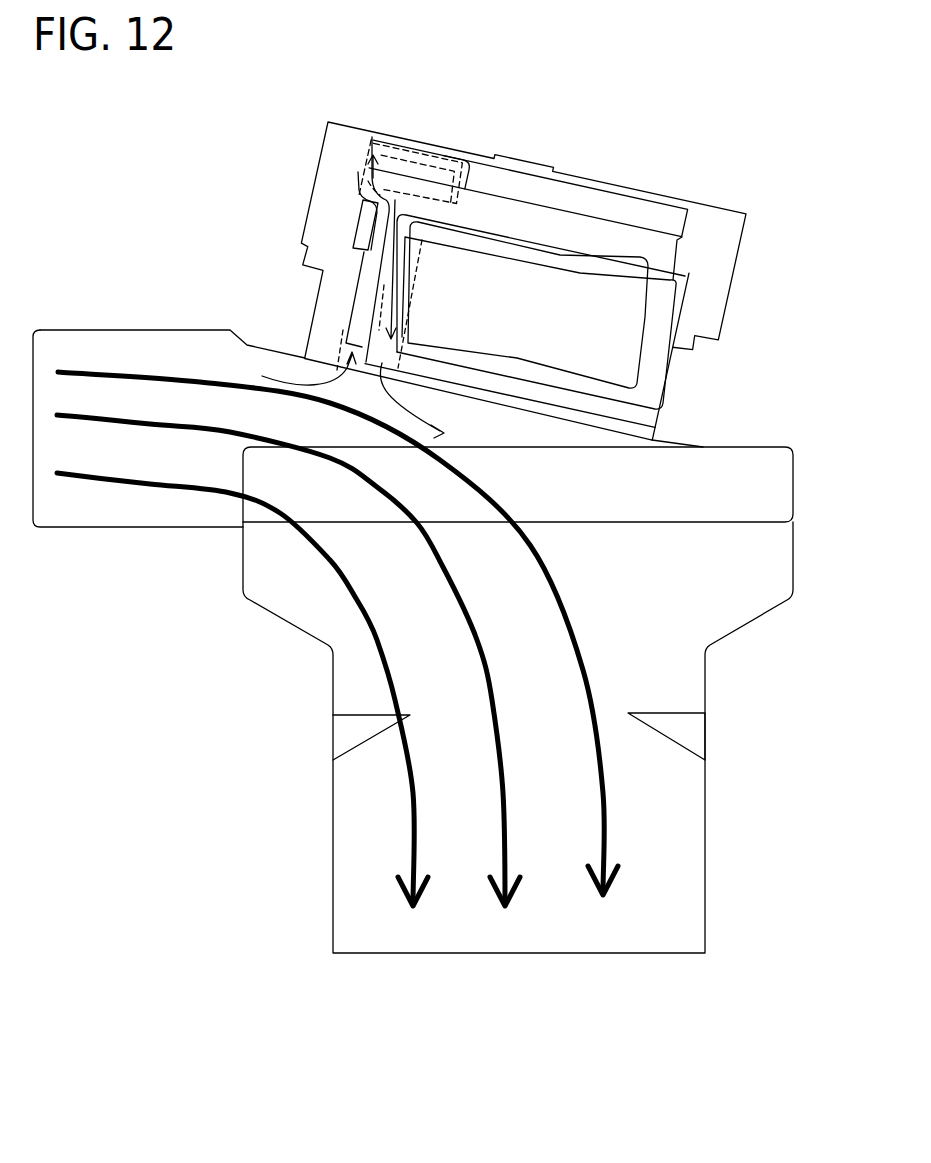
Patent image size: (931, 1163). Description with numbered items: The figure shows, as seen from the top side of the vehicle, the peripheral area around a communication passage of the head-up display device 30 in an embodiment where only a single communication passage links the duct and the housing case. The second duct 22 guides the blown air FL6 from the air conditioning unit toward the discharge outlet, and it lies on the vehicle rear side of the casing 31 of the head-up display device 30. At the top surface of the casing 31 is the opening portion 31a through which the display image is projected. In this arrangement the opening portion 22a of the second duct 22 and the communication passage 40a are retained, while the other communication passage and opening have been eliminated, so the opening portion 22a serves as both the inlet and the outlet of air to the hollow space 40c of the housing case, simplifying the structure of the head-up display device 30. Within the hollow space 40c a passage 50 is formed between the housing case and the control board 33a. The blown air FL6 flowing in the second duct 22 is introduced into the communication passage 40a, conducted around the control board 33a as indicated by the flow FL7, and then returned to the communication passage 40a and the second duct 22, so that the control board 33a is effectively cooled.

The second duct 22 is at (763, 615).
The opening portion 22a is at (347, 332).
The head-up display device 30 is at (476, 262).
The casing 31 is at (698, 201).
The opening portion 31a is at (568, 310).
The control board 33a is at (368, 181).
The communication passage 40a is at (355, 300).
The hollow space 40c is at (468, 186).
The passage 50 is at (413, 145).
The blown air FL6 is at (333, 567).
The air flow around control board FL7 is at (370, 182).